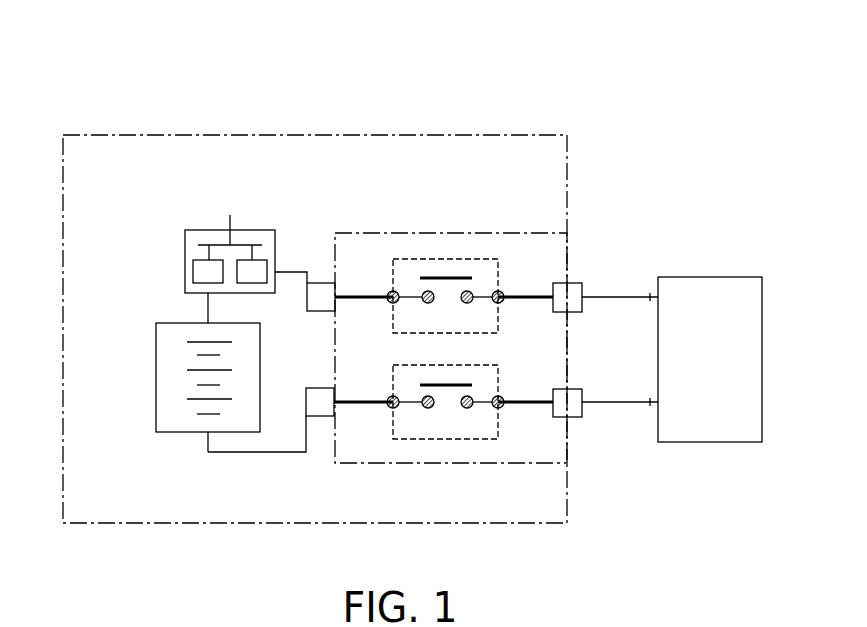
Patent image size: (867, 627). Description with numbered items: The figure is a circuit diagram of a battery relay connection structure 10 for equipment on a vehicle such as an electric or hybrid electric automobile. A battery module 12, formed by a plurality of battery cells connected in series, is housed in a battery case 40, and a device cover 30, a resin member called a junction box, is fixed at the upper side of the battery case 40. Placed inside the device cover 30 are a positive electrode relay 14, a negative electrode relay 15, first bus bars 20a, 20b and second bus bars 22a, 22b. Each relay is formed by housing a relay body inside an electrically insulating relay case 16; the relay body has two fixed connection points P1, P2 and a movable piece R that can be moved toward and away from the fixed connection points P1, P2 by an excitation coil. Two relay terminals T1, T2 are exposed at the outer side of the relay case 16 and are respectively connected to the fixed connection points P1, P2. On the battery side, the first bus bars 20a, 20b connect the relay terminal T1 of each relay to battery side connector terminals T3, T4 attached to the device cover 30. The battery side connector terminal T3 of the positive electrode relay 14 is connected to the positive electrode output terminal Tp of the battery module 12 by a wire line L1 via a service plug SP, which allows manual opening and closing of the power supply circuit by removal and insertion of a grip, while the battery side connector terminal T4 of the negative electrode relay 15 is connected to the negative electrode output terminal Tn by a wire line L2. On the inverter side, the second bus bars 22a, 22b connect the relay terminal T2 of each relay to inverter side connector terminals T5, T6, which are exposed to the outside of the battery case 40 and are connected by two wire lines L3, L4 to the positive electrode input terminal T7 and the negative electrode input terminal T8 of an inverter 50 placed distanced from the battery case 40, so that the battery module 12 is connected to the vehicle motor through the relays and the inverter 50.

The battery relay connection structure 10 is at (600, 77).
The battery case 40 is at (337, 135).
The device cover 30 is at (400, 463).
The battery module 12 is at (156, 397).
The service plug SP is at (203, 230).
The positive electrode output terminal Tp is at (208, 320).
The negative electrode output terminal Tn is at (203, 432).
The wire line L1 is at (278, 270).
The wire line L2 is at (238, 452).
The wire line L3 is at (613, 303).
The wire line L4 is at (611, 405).
The relay terminal T1 is at (391, 291).
The relay terminal T2 is at (504, 292).
The battery side connector terminal T3 is at (316, 283).
The battery side connector terminal T4 is at (322, 416).
The inverter side connector terminal T5 is at (572, 283).
The inverter side connector terminal T6 is at (568, 389).
The positive electrode input terminal T7 is at (650, 290).
The negative electrode input terminal T8 is at (650, 406).
The first bus bar 20a is at (357, 297).
The first bus bar 20b is at (390, 407).
The second bus bar 22a is at (525, 295).
The second bus bar 22b is at (507, 406).
The relay case 16 is at (418, 259).
The negative electrode relay 15 is at (485, 440).
The positive electrode relay 14 is at (480, 258).
The movable piece R is at (452, 275).
The fixed connection point P1 is at (426, 305).
The fixed connection point P2 is at (468, 305).
The inverter 50 is at (732, 277).